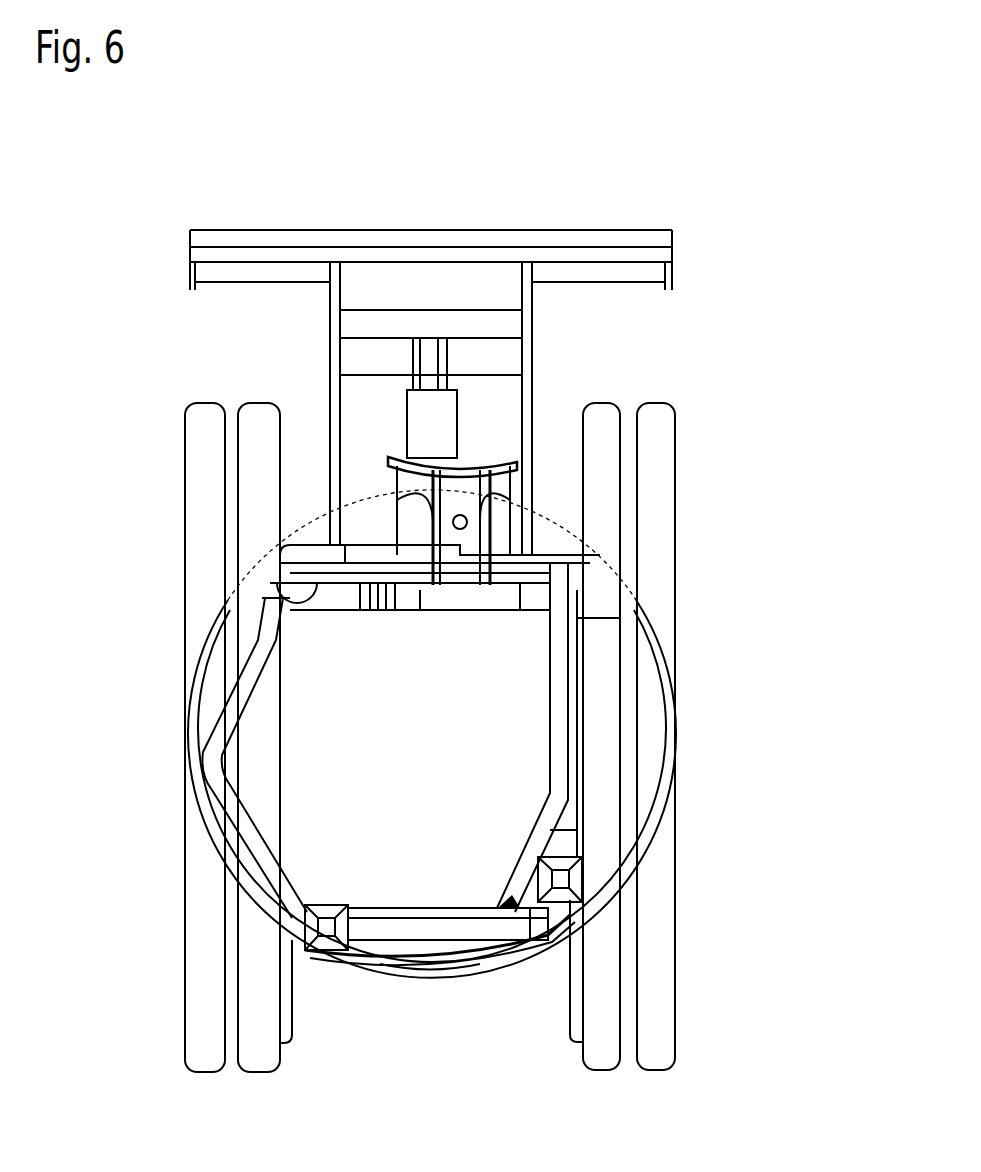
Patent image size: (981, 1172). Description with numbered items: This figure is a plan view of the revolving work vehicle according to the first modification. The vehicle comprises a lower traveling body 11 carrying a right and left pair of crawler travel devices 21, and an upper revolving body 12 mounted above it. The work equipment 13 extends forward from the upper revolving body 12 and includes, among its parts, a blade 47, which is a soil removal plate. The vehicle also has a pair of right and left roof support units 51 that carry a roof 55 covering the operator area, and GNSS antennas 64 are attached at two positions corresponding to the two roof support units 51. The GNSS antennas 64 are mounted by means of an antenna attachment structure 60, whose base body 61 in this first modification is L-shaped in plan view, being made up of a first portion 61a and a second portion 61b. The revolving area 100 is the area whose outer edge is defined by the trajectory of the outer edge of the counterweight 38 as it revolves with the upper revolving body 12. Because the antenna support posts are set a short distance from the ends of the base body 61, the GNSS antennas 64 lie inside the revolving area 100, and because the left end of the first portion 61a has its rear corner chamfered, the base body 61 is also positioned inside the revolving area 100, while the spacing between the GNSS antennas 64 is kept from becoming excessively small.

The blade 47 is at (440, 245).
The lower traveling body 11 is at (166, 404).
The crawler travel device 21 is at (205, 415).
The work equipment 13 is at (386, 464).
The upper revolving body 12 is at (662, 630).
The revolving area 100 is at (495, 814).
The roof 55 is at (277, 672).
The roof support unit 51 is at (570, 752).
The GNSS antenna 64 is at (548, 862).
The antenna attachment structure 60 is at (405, 948).
The base body 61 is at (440, 1025).
The first portion 61a is at (450, 960).
The second portion 61b is at (533, 905).
The counterweight 38 is at (430, 975).